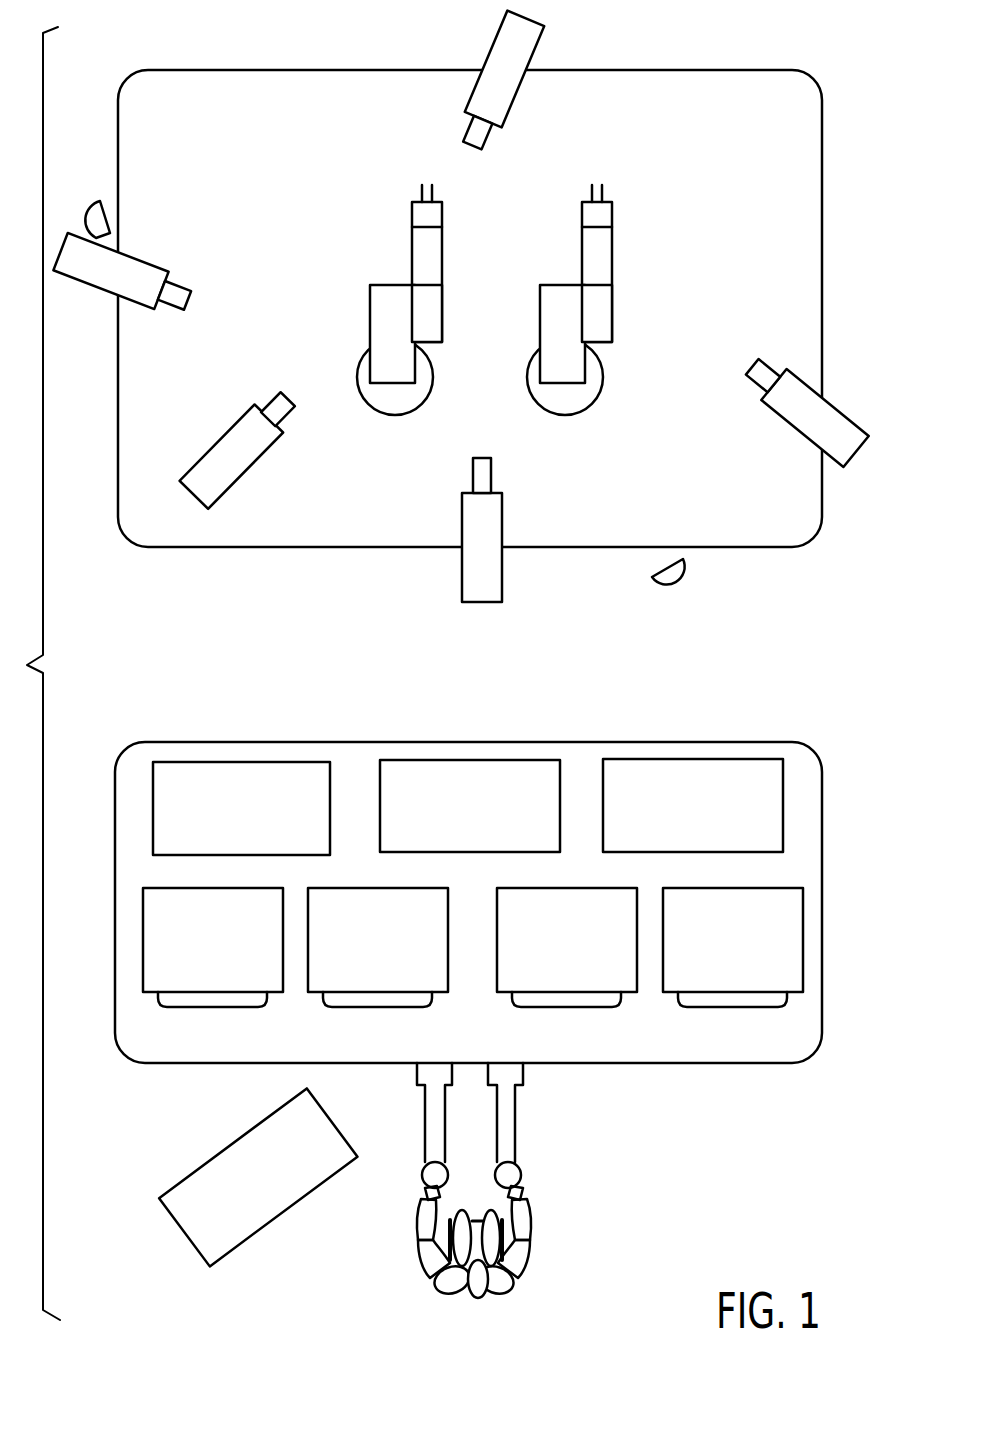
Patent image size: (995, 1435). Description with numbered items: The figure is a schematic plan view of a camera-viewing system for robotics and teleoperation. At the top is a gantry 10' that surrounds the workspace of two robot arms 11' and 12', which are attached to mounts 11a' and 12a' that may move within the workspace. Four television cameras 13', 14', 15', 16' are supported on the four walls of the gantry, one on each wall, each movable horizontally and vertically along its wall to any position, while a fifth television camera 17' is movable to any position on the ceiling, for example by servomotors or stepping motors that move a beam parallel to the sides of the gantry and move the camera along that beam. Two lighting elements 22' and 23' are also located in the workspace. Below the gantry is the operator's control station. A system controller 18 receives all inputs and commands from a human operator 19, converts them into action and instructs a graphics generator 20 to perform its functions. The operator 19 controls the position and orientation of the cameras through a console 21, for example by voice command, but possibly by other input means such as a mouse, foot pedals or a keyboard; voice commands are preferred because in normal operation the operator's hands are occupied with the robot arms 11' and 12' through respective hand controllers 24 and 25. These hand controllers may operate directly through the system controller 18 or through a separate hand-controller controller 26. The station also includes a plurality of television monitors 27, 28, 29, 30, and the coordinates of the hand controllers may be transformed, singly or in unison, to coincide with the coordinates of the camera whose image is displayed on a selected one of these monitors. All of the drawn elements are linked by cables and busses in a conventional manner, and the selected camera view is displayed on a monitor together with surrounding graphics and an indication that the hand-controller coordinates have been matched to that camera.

The gantry 10' is at (470, 304).
The robot arm 11' is at (452, 263).
The mount 11a' is at (421, 351).
The robot arm 12' is at (623, 263).
The mount 12a' is at (594, 351).
The television camera 13' is at (123, 268).
The television camera 14' is at (525, 82).
The television camera 15' is at (506, 530).
The television camera 16' is at (804, 409).
The television camera 17' is at (241, 447).
The lighting element 22' is at (95, 198).
The lighting element 23' is at (698, 572).
The system controller 18 is at (272, 770).
The hand-controller controller 26 is at (511, 768).
The graphics generator 20 is at (728, 772).
The television monitor 27 is at (211, 888).
The television monitor 28 is at (378, 888).
The television monitor 29 is at (565, 888).
The television monitor 30 is at (735, 888).
The hand controller 24 is at (422, 1175).
The hand controller 25 is at (521, 1175).
The human operator 19 is at (490, 1296).
The console 21 is at (196, 1252).